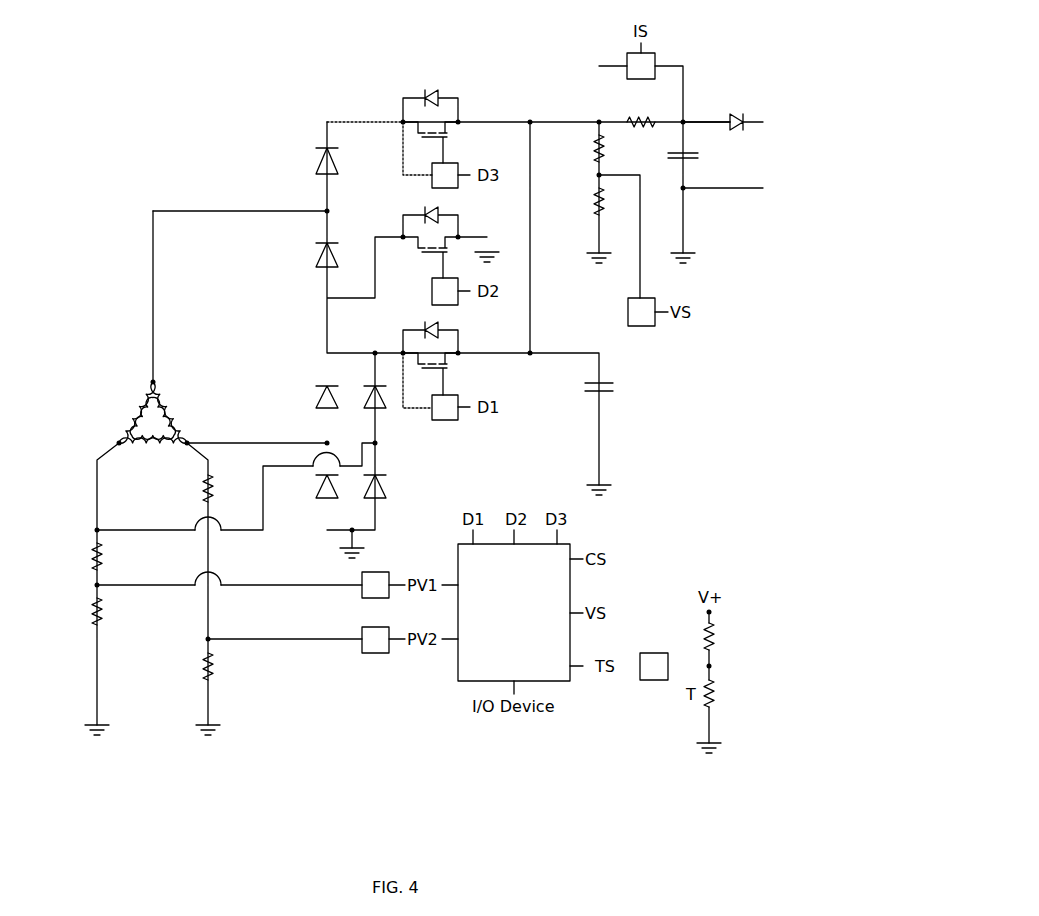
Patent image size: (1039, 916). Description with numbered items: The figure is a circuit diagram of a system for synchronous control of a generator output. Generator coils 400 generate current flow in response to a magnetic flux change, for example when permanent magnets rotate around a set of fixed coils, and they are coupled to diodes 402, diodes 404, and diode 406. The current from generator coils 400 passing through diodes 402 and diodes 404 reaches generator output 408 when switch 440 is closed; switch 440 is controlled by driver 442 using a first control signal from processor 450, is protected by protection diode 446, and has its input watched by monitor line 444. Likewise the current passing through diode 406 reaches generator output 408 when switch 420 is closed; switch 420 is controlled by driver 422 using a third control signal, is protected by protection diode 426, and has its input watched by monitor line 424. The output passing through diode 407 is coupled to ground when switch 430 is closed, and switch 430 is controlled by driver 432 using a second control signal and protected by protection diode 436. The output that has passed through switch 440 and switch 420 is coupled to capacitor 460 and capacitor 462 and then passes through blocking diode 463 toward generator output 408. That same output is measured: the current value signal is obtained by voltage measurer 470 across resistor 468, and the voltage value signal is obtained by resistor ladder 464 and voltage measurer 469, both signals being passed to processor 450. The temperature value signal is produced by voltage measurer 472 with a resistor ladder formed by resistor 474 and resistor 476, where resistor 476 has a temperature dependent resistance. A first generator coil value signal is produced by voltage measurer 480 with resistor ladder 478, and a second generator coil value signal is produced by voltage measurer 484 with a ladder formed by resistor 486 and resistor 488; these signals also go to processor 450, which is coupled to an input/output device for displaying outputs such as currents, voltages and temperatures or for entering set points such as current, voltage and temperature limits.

The generator coils 400 is at (133, 411).
The diodes 402 is at (334, 408).
The diodes 404 is at (357, 509).
The diode 406 is at (340, 180).
The diode 407 is at (321, 267).
The generator output 408 is at (755, 108).
The switch 420 is at (443, 137).
The driver 422 is at (452, 186).
The monitor line 424 is at (402, 168).
The protection diode 426 is at (438, 98).
The switch 430 is at (430, 255).
The driver 432 is at (433, 291).
The protection diode 436 is at (428, 212).
The switch 440 is at (443, 368).
The driver 442 is at (452, 418).
The monitor line 444 is at (410, 412).
The protection diode 446 is at (438, 329).
The processor 450 is at (560, 678).
The capacitor 460 is at (613, 389).
The capacitor 462 is at (697, 157).
The blocking diode 463 is at (727, 117).
The resistor ladder 464 is at (592, 210).
The resistor 468 is at (640, 127).
The voltage measurer 469 is at (628, 320).
The voltage measurer 470 is at (627, 58).
The voltage measurer 472 is at (661, 654).
The resistor 474 is at (714, 644).
The resistor 476 is at (709, 696).
The resistor ladder 478 is at (92, 610).
The voltage measurer 480 is at (362, 593).
The voltage measurer 484 is at (362, 649).
The resistor 486 is at (202, 659).
The resistor 488 is at (202, 492).